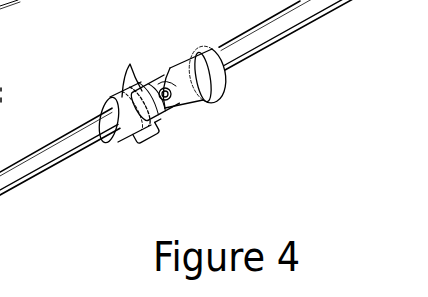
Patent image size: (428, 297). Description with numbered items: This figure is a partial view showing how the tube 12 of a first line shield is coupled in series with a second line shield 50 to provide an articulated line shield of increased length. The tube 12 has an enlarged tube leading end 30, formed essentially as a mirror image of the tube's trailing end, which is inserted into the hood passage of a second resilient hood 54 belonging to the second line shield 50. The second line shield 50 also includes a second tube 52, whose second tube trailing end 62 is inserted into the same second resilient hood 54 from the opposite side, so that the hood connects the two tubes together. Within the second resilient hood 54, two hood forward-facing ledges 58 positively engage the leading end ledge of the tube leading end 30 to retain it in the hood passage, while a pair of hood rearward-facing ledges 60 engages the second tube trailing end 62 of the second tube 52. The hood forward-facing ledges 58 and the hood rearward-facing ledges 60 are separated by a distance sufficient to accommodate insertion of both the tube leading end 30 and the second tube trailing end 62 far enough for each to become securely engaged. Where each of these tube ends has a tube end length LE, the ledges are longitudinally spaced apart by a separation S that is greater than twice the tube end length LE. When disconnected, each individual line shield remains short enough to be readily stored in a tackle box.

The tube 12 is at (47, 172).
The tube leading end 30 is at (123, 92).
The second line shield 50 is at (262, 137).
The second tube 52 is at (273, 50).
The second resilient hood 54 is at (135, 140).
The hood forward-facing ledges 58 is at (147, 88).
The hood rearward-facing ledges 60 is at (216, 70).
The second tube trailing end 62 is at (170, 92).
The tube end length LE is at (213, 12).
The separation S is at (268, 88).